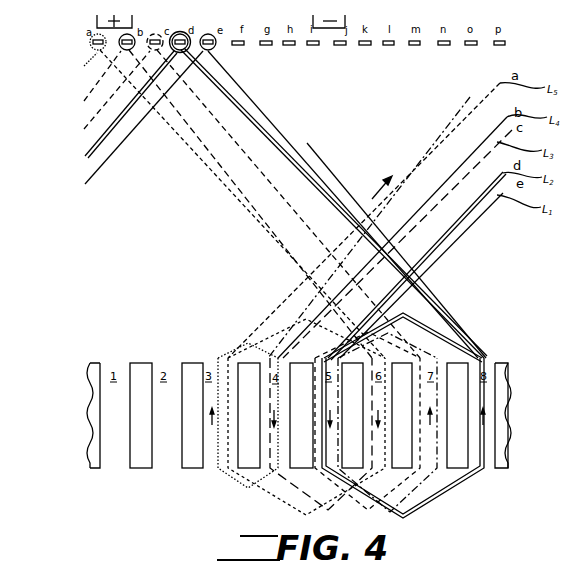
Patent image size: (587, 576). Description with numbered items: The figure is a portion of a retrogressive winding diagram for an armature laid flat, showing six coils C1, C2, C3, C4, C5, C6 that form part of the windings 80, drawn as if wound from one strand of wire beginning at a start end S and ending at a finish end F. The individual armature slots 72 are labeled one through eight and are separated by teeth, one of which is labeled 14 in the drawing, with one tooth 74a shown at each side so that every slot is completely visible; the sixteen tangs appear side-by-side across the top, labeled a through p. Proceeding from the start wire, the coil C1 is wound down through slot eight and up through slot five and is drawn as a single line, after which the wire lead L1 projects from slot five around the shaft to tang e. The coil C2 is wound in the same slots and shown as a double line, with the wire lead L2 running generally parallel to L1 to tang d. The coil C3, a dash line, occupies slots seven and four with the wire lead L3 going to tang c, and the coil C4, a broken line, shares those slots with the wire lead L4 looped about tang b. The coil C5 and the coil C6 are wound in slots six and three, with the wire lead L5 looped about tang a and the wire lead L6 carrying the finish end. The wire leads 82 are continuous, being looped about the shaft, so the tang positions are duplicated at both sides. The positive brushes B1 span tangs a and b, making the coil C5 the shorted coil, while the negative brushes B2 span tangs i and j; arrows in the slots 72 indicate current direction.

The plate 14 is at (143, 362).
The armature slots 72 is at (114, 472).
The tooth 74a is at (90, 420).
The windings 80 is at (245, 316).
The wire leads 82 is at (262, 92).
The commutator brush B1 is at (95, 20).
The commutator brush B2 is at (350, 18).
The wire lead L1 is at (85, 184).
The wire lead L2 is at (85, 156).
The wire lead L3 is at (84, 129).
The wire lead L4 is at (84, 101).
The wire lead L5 is at (84, 66).
The wire lead L6 is at (424, 146).
The coil C1 is at (436, 498).
The coil C2 is at (396, 510).
The coil C3 is at (369, 510).
The coil C4 is at (333, 510).
The coil C5 is at (303, 516).
The coil C6 is at (234, 478).